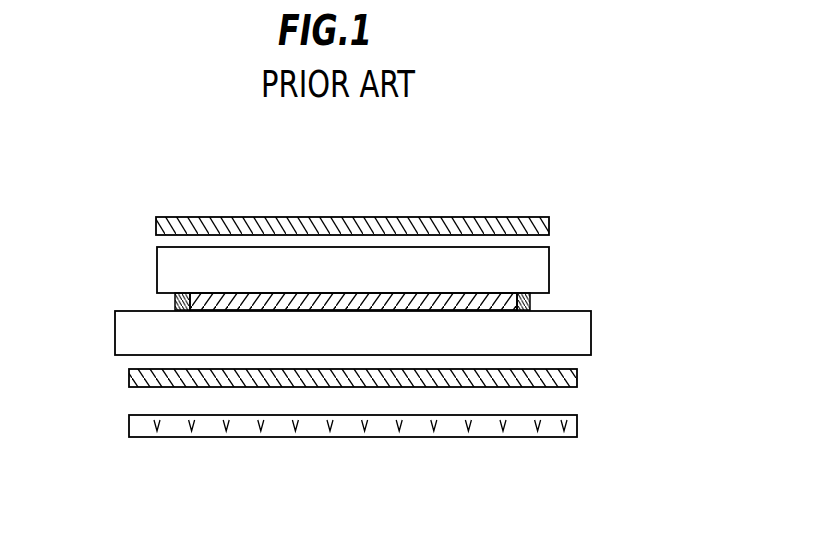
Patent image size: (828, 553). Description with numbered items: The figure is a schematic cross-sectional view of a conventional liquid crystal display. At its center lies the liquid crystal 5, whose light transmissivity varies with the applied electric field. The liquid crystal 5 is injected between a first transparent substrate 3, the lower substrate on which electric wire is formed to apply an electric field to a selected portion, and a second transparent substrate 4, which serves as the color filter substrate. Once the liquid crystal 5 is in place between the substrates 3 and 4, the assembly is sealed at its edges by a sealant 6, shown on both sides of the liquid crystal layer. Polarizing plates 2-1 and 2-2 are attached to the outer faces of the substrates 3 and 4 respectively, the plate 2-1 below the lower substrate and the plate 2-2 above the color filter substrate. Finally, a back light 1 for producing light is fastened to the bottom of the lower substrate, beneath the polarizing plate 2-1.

The back light 1 is at (577, 425).
The polarizing plate 2-1 is at (577, 373).
The polarizing plate 2-2 is at (549, 216).
The first transparent substrate 3 is at (591, 336).
The second transparent substrate 4 is at (549, 268).
The liquid crystal 5 is at (213, 297).
The sealant 6 is at (175, 303).